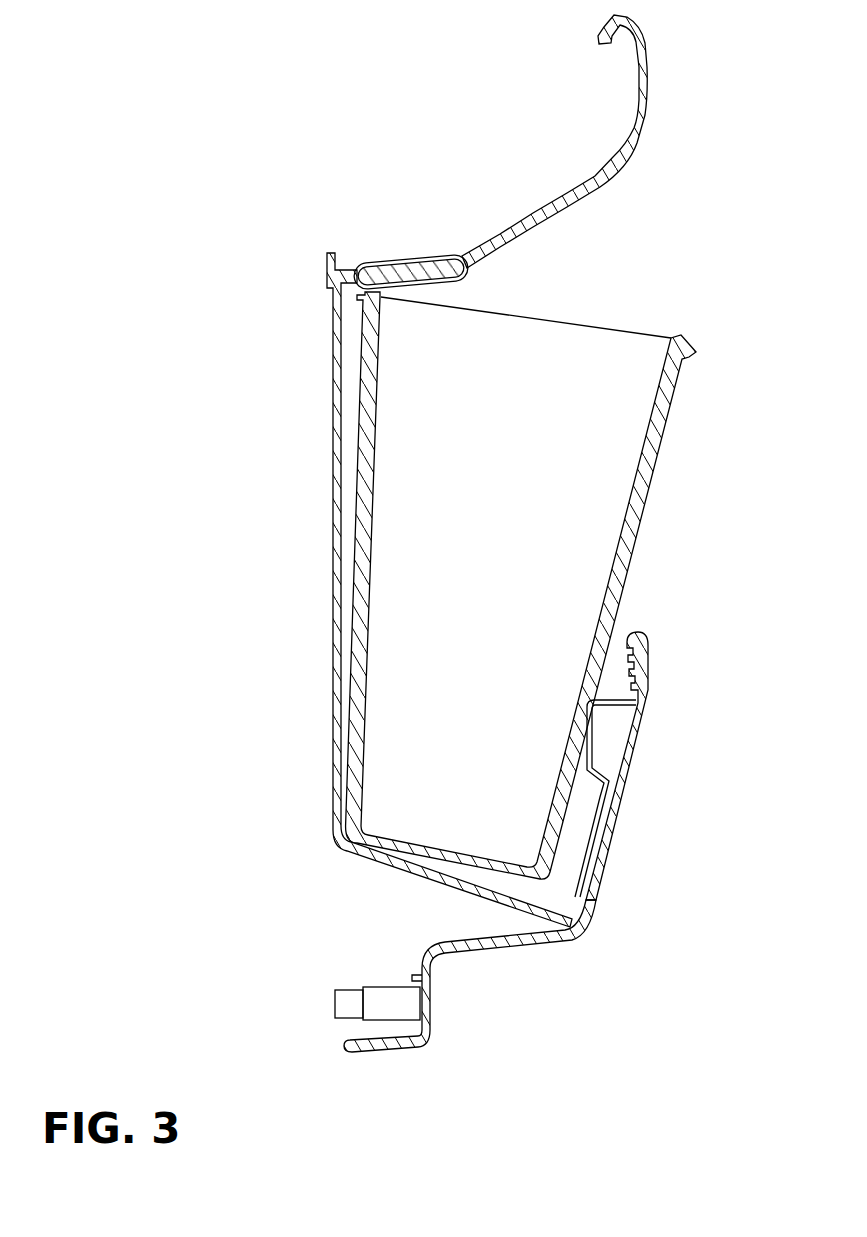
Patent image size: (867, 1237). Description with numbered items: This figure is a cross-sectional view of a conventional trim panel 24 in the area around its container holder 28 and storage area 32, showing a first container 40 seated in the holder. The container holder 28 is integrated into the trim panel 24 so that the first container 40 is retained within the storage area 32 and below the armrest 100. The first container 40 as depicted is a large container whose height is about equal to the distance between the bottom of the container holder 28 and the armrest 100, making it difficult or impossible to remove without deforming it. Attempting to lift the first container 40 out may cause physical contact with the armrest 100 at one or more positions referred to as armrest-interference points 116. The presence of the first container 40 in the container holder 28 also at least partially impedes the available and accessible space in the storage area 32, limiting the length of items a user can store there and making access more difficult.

The trim panel 24 is at (326, 397).
The container holder 28 is at (608, 748).
The storage area 32 is at (557, 872).
The first container 40 is at (407, 625).
The armrest 100 is at (596, 163).
The armrest-interference points 116 is at (410, 258).